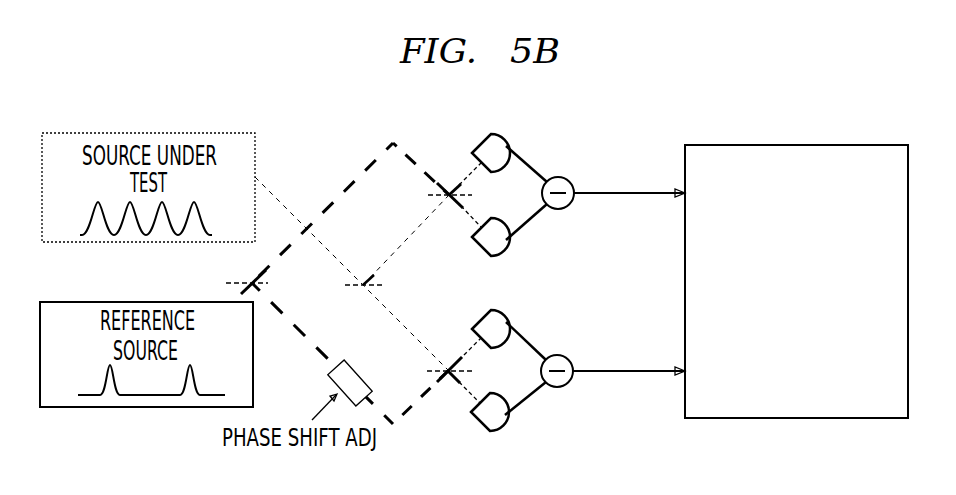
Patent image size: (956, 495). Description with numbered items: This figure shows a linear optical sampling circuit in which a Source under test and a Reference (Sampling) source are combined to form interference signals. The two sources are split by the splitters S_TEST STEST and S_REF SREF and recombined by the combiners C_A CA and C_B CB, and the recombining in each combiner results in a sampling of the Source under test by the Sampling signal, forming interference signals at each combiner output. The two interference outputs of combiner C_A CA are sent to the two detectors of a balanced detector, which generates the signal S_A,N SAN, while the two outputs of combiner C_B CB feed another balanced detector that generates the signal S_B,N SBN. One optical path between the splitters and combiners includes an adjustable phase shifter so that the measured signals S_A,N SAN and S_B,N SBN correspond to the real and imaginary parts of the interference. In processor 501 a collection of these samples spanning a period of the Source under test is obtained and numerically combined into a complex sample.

The processor 501 is at (795, 418).
The splitter S_REF SREF is at (266, 287).
The splitter S_TEST STEST is at (389, 287).
The combiner C_A CA is at (437, 192).
The combiner C_B CB is at (437, 369).
The signal S_A,N SAN is at (622, 195).
The signal S_B,N SBN is at (620, 368).